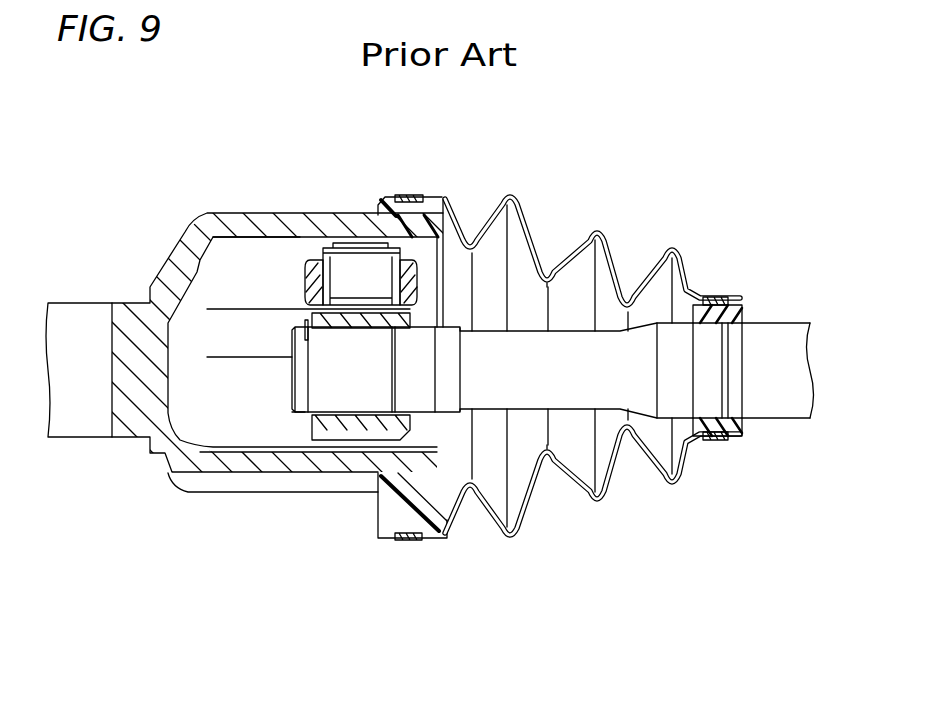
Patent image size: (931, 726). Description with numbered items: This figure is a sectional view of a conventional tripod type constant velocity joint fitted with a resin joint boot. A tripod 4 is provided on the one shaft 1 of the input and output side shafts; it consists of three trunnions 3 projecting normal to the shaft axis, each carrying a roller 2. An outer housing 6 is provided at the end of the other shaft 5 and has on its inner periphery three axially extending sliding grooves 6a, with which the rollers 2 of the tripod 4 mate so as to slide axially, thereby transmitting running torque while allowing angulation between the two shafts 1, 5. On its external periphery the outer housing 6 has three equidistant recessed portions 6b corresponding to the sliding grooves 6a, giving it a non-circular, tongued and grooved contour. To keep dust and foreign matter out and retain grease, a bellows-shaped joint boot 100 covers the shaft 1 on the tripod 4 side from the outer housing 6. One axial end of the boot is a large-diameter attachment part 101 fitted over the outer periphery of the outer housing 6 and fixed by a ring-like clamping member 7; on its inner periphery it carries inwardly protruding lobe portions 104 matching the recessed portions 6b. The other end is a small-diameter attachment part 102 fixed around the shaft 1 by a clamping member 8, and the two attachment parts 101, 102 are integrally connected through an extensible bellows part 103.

The shaft 1 is at (777, 407).
The rollers 2 is at (302, 258).
The trunnions 3 is at (349, 272).
The tripod 4 is at (296, 424).
The other shaft 5 is at (92, 420).
The outer housing 6 is at (213, 212).
The sliding grooves 6a is at (257, 244).
The recessed portions 6b is at (317, 473).
The clamping member 7 is at (408, 197).
The clamping member 8 is at (718, 297).
The joint boot 100 is at (591, 209).
The large-diameter attachment part 101 is at (432, 203).
The small-diameter attachment part 102 is at (737, 300).
The bellows part 103 is at (580, 505).
The lobe portions 104 is at (377, 502).